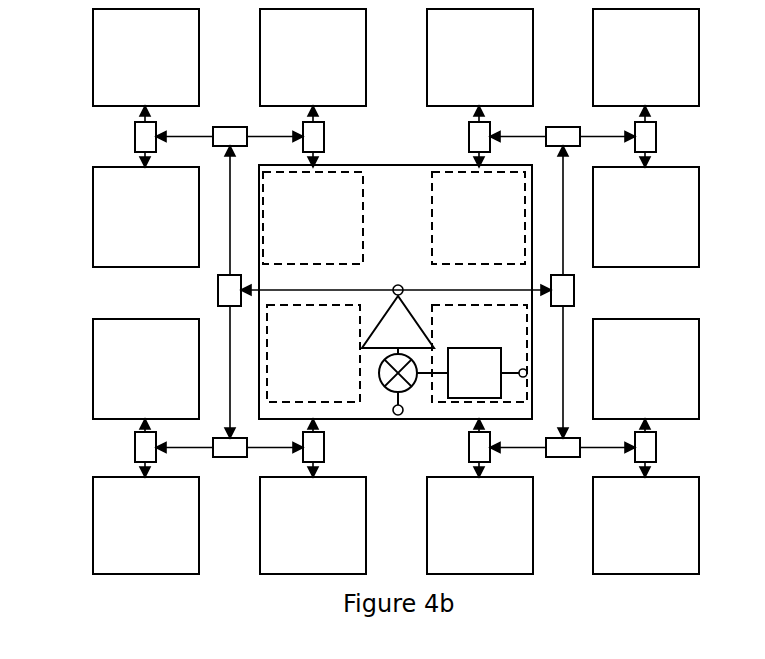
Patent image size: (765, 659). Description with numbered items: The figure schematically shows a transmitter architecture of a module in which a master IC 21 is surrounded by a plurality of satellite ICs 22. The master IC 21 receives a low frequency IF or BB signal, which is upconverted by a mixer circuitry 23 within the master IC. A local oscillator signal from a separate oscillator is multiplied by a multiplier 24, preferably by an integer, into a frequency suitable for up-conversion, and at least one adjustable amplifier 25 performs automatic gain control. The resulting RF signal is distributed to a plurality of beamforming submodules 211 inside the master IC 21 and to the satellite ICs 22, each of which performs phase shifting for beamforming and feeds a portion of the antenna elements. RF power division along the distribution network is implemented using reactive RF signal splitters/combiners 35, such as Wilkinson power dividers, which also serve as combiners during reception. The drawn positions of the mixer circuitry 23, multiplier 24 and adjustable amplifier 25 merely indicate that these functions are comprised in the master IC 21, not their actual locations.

The master IC 21 is at (257, 406).
The satellite IC 22 is at (113, 68).
The mixer circuitry 23 is at (380, 370).
The multiplier 24 is at (522, 369).
The adjustable amplifier 25 is at (399, 285).
The reactive RF signal splitter/combiner 35 is at (138, 145).
The beamforming submodule 211 is at (470, 213).